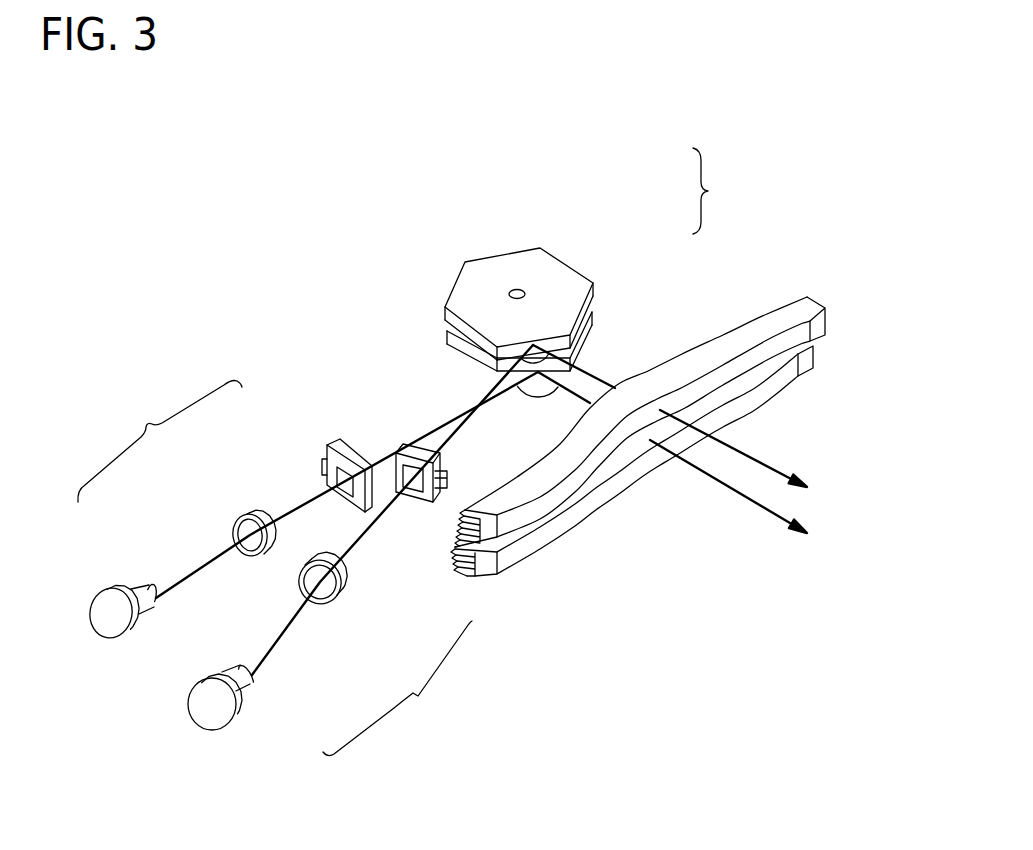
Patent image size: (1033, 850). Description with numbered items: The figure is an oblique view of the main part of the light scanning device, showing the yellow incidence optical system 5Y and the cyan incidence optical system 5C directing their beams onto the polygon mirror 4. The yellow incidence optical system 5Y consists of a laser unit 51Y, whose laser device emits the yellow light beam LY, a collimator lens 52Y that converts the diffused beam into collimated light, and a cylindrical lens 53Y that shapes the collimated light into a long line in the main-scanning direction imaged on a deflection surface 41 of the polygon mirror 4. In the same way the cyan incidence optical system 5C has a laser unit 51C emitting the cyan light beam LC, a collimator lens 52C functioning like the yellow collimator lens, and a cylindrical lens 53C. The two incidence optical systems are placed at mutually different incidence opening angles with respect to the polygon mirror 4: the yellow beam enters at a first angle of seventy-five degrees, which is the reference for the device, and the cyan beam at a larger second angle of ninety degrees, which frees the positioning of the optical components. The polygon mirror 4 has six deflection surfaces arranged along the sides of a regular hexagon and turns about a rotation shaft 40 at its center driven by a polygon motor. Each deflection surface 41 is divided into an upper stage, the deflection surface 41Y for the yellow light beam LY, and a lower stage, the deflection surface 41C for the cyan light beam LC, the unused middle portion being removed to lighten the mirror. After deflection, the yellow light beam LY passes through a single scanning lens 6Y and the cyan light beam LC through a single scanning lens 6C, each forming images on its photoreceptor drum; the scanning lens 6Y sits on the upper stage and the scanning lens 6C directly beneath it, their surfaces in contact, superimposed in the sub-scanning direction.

The polygon mirror 4 is at (535, 203).
The rotation shaft 40 is at (517, 291).
The deflection surface 41 is at (719, 191).
The deflection surface for the yellow light beam 41Y is at (587, 313).
The deflection surface for the cyan light beam 41C is at (601, 382).
The cyan incidence optical system 5C is at (225, 511).
The laser unit 51C is at (132, 590).
The collimator lens 52C is at (241, 527).
The cylindrical lens 53C is at (323, 467).
The yellow incidence optical system 5Y is at (330, 600).
The laser unit 51Y is at (243, 697).
The collimator lens 52Y is at (345, 589).
The cylindrical lens 53Y is at (410, 492).
The scanning lens 6Y is at (787, 322).
The scanning lens 6C is at (772, 390).
The cyan light beam LC is at (177, 588).
The yellow light beam LY is at (262, 657).